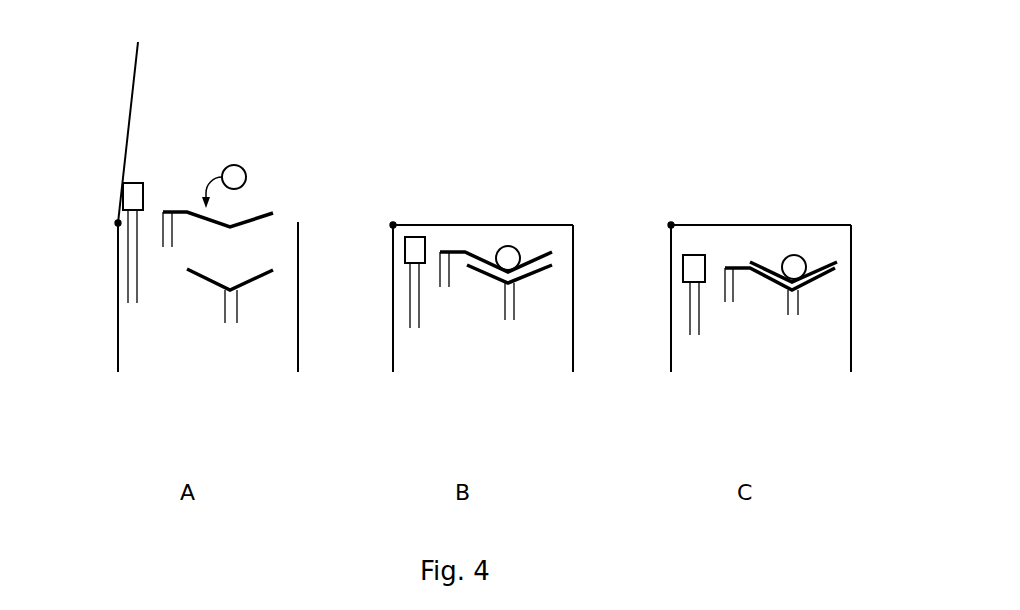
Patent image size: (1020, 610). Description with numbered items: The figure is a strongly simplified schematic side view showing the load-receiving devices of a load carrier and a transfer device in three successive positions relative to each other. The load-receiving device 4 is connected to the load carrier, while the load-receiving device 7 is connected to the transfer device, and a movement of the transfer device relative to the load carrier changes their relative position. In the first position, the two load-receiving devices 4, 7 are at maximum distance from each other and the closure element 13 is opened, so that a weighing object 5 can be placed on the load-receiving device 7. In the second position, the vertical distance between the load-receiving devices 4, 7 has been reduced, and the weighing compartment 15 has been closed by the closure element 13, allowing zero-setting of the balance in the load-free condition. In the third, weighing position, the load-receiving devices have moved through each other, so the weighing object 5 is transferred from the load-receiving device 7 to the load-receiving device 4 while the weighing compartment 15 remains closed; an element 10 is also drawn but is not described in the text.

The load-receiving device 4 is at (203, 280).
The weighing object 5 is at (235, 170).
The load-receiving device 7 is at (262, 215).
The block / stop element 10 is at (132, 212).
The closure element 13 is at (130, 105).
The weighing compartment 15 is at (160, 278).